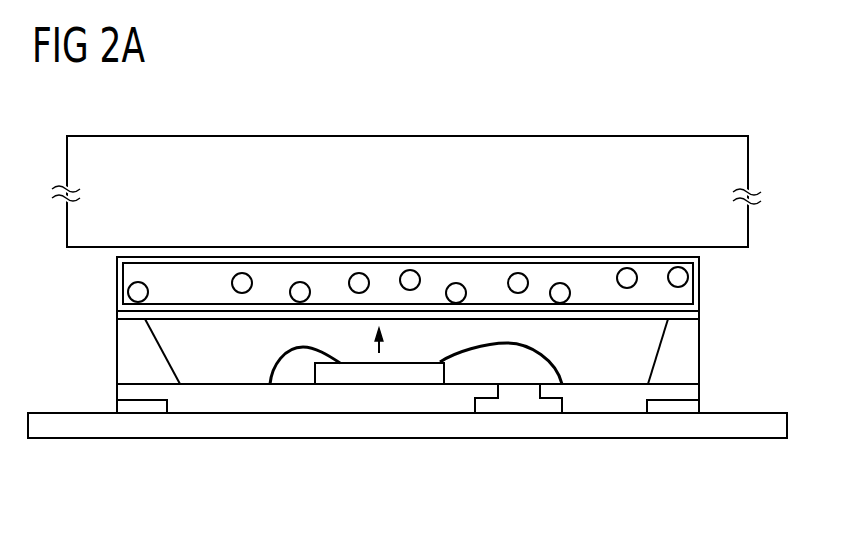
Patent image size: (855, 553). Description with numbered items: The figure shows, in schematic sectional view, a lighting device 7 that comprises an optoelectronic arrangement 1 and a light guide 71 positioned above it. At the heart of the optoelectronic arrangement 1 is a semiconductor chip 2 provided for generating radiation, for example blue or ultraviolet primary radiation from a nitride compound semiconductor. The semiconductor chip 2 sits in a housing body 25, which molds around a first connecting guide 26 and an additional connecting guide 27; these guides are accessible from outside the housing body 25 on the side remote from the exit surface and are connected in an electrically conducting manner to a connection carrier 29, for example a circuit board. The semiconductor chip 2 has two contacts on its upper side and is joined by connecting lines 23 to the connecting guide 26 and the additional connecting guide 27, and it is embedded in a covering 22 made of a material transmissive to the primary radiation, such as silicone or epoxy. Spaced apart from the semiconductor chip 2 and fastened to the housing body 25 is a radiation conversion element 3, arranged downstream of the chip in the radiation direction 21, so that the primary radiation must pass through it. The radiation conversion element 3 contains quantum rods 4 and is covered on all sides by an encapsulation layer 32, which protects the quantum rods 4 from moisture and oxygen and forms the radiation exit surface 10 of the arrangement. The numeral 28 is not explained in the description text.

The optoelectronic arrangement 1 is at (438, 337).
The semiconductor chip 2 is at (387, 373).
The radiation conversion element 3 is at (432, 257).
The quantum rods 4 is at (455, 282).
The lighting device 7 is at (428, 145).
The radiation exit surface 10 is at (290, 248).
The radiation direction 21 is at (385, 350).
The covering 22 is at (198, 372).
The connecting lines 23 is at (275, 360).
The housing body 25 is at (688, 350).
The first connecting guide 26 is at (295, 400).
The additional connecting guide 27 is at (614, 400).
The frame wall 28 is at (117, 312).
The connection carrier 29 is at (757, 428).
The encapsulation layer 32 is at (700, 300).
The light guide 71 is at (738, 155).